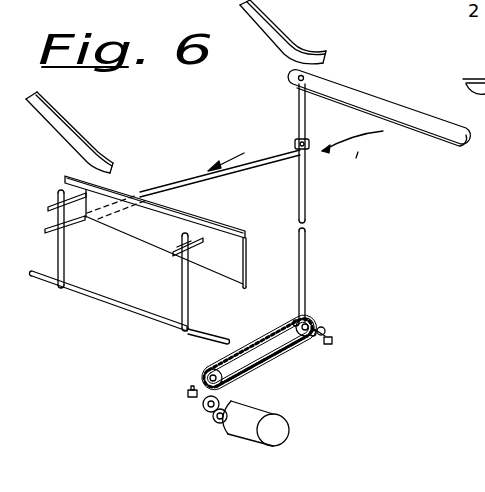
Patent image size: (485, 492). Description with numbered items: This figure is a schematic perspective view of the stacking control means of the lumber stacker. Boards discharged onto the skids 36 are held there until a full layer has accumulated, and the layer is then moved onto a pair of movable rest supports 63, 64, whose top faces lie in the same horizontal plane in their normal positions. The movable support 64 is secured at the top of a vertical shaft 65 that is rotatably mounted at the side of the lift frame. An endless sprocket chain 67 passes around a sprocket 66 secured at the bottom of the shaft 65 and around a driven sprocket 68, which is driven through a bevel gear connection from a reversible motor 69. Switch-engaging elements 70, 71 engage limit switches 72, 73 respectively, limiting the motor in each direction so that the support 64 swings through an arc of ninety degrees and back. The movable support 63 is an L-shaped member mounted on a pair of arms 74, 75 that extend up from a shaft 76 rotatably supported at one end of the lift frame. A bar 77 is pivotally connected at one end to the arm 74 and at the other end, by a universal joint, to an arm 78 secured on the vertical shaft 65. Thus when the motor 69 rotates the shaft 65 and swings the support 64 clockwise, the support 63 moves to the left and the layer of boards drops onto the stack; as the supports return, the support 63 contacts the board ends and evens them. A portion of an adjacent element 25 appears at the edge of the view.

The hopper portion 25 is at (471, 0).
The skids 36 is at (60, 125).
The movable rest support 63 is at (155, 232).
The movable rest support 64 is at (373, 100).
The vertical shaft 65 is at (306, 117).
The sprocket 66 is at (311, 320).
The endless sprocket chain 67 is at (277, 354).
The driven sprocket 68 is at (203, 375).
The reversible motor 69 is at (240, 430).
The switch-engaging element 70 is at (255, 368).
The switch-engaging element 71 is at (325, 325).
The limit switch 72 is at (188, 395).
The limit switch 73 is at (363, 356).
The arm 74 is at (66, 269).
The arm 75 is at (190, 289).
The shaft 76 is at (123, 307).
The bar 77 is at (231, 174).
The arm 78 is at (296, 140).